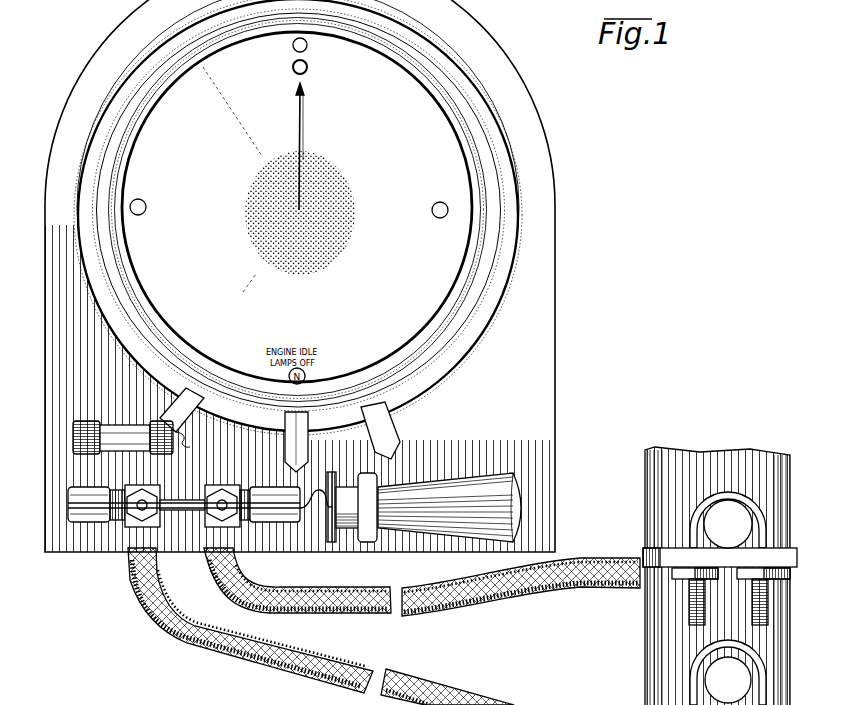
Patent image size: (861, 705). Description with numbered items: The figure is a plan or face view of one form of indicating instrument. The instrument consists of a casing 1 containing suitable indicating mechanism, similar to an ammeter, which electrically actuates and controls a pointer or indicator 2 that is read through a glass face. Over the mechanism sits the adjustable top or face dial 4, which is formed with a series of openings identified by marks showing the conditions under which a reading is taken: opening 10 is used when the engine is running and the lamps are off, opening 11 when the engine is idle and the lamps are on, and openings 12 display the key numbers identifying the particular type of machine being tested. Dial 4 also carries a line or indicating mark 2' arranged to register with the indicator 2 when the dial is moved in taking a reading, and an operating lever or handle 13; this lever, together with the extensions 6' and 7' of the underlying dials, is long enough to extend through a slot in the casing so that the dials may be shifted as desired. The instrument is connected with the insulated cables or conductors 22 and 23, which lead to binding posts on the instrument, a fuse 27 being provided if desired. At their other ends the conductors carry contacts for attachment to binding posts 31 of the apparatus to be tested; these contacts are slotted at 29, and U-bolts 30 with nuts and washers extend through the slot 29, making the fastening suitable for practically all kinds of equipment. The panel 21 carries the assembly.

The casing 1 is at (510, 284).
The pointer or indicator 2 is at (316, 146).
The line or indicating mark 2' is at (325, 122).
The dial 4 is at (424, 129).
The extension 6' is at (186, 425).
The extension 7' is at (402, 430).
The opening 10 is at (147, 207).
The opening 11 is at (431, 210).
The openings 12 is at (292, 48).
The operating lever or handle 13 is at (310, 454).
The mounting panel 21 is at (537, 388).
The cable or conductor 22 is at (462, 613).
The cable or conductor 23 is at (452, 690).
The fuse 27 is at (118, 426).
The slot 29 is at (184, 500).
The U-bolt 30 is at (709, 654).
The binding post 31 is at (728, 601).